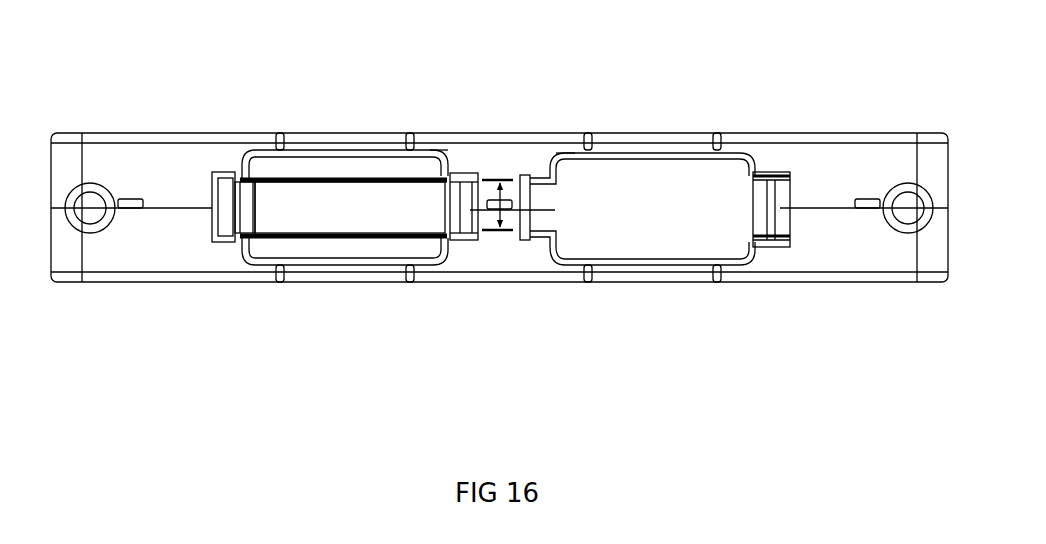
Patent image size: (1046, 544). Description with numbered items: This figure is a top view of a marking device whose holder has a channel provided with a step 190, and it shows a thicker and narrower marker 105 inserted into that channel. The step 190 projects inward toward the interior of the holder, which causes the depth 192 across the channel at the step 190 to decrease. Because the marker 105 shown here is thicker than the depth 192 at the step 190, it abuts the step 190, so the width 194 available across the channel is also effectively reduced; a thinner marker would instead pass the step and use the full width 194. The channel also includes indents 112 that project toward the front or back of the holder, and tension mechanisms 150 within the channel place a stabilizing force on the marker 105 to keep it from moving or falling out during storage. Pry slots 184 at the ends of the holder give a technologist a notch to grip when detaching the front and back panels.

The pry slot 184 is at (135, 190).
The tension mechanism 150 is at (226, 172).
The X-ray marker 105 is at (313, 178).
The indent 112 is at (431, 152).
The step 190 is at (535, 162).
The width 194 is at (268, 252).
The depth 192 is at (502, 242).